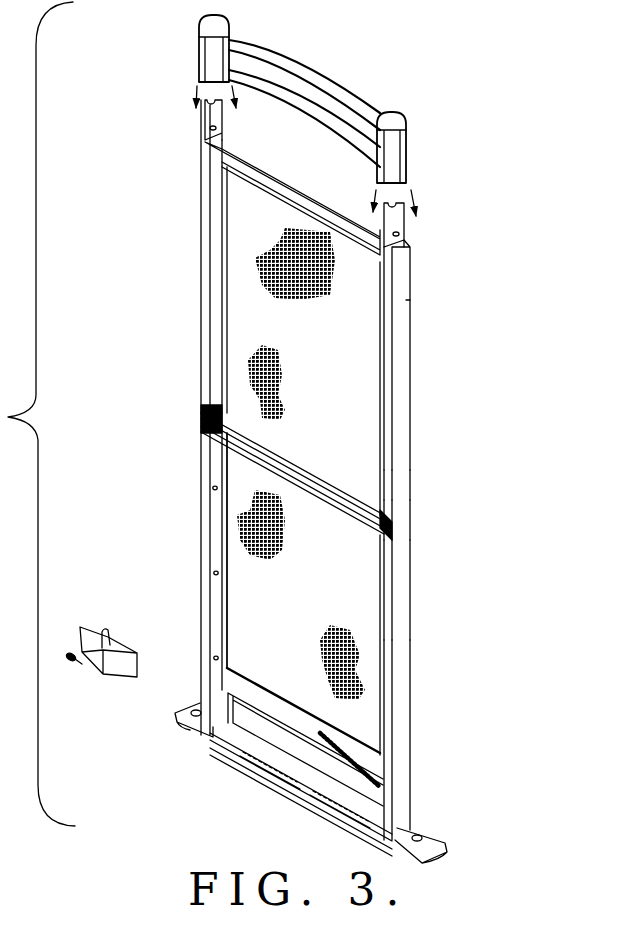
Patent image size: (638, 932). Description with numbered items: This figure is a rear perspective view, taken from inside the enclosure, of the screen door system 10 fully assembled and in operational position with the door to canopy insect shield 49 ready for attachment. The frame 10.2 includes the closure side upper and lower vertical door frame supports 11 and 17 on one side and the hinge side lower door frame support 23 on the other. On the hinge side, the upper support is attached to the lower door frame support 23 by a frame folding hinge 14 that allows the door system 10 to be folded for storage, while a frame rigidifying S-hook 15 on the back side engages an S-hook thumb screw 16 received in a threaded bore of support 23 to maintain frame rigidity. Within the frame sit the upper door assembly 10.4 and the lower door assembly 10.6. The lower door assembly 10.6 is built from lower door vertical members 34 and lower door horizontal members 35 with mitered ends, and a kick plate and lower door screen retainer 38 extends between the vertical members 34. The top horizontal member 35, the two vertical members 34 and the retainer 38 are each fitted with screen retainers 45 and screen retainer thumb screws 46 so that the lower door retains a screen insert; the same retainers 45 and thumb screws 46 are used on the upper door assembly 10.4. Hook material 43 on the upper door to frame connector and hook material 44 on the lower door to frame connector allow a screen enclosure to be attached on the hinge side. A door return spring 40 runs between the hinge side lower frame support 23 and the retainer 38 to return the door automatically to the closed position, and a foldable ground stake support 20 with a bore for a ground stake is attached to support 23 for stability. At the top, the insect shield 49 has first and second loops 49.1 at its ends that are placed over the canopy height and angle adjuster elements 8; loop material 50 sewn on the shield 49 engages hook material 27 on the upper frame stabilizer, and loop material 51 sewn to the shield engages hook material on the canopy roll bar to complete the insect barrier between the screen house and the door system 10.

The door system 10 is at (470, 402).
The frame 10.2 is at (410, 320).
The upper door assembly 10.4 is at (250, 322).
The lower door assembly 10.6 is at (367, 703).
The canopy height and angle adjuster element 8 is at (210, 125).
The closure side upper vertical door frame support 11 is at (212, 226).
The frame folding hinge 14 is at (413, 507).
The frame rigidifying S-hook 15 is at (399, 535).
The S-hook thumb screw 16 is at (411, 482).
The closure side lower vertical door frame support 17 is at (205, 475).
The ground stake support 20 is at (190, 720).
The hinge side lower door frame support 23 is at (405, 662).
The hook material 27 is at (270, 160).
The lower door vertical member 34 is at (222, 621).
The lower door horizontal member 35 is at (322, 513).
The kick plate and lower door screen retainer 38 is at (240, 683).
The door return spring 40 is at (370, 773).
The hook material 43 is at (410, 370).
The hook material 44 is at (411, 614).
The screen retainer 45 is at (88, 625).
The screen retainer thumb screw 46 is at (74, 664).
The door to canopy insect shield 49 is at (410, 157).
The loop 49.1 is at (200, 48).
The loop material 50 is at (278, 112).
The loop material 51 is at (327, 78).